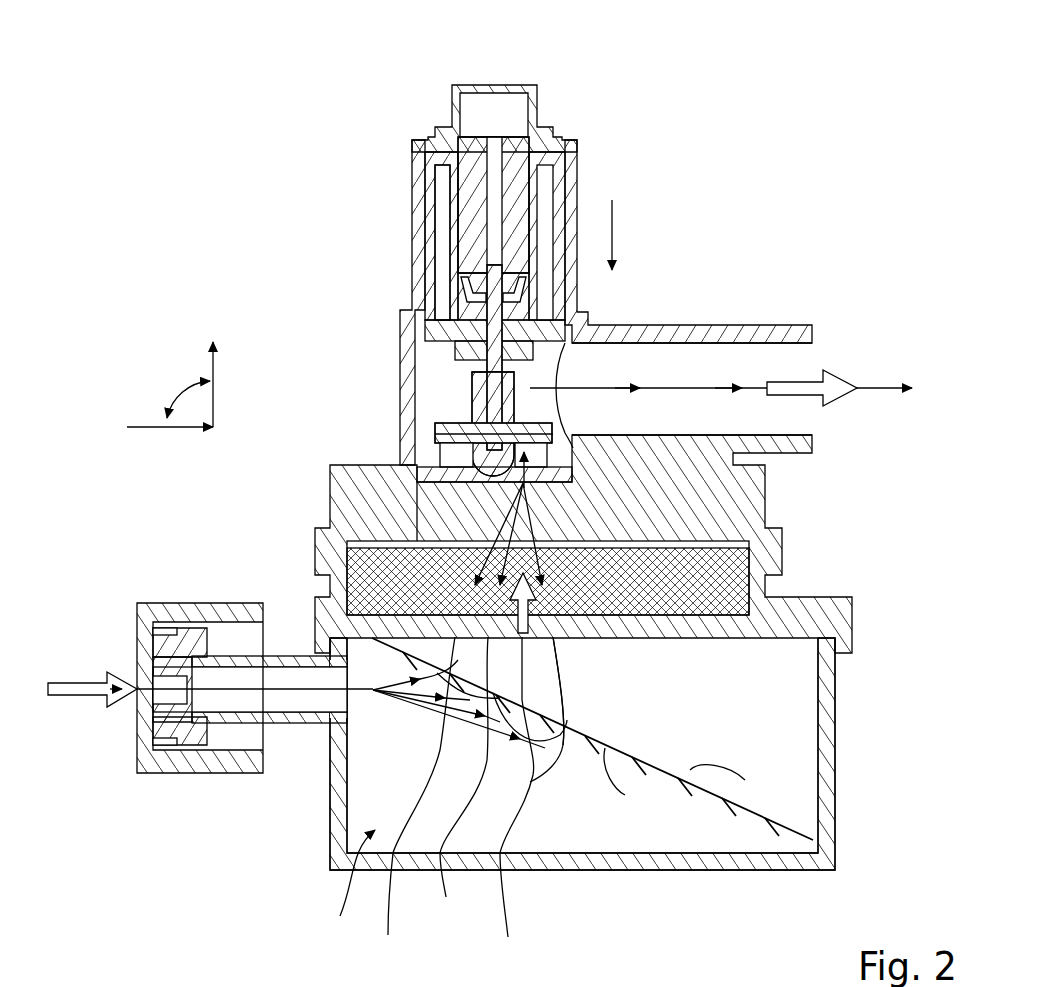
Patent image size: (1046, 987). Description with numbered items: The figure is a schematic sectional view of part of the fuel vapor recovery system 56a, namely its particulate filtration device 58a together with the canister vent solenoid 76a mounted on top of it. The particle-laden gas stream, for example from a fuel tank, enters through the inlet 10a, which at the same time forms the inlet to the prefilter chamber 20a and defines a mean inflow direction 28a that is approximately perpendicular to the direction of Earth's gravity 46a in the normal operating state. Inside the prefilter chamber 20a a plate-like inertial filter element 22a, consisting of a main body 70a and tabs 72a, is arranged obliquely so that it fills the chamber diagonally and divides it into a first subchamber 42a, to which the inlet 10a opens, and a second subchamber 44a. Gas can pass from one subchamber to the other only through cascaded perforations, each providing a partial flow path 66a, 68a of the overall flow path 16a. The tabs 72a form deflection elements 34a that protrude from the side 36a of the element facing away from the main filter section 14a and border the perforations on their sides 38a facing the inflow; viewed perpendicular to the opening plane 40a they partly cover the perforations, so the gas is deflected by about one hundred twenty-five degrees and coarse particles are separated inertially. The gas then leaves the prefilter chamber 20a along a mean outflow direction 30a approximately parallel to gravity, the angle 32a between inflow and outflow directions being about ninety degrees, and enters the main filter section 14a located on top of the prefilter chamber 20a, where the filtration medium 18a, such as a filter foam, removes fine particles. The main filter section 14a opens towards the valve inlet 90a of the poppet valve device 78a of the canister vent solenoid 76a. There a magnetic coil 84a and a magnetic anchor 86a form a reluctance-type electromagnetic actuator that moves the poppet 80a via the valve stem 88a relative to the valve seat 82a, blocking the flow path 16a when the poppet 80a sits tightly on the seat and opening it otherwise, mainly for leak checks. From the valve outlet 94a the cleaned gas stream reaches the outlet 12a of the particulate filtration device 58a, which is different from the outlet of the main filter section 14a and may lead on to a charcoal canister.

The inlet 10a is at (228, 704).
The outlet 12a is at (745, 370).
The main filter section 14a is at (725, 572).
The flow path 16a is at (75, 692).
The filtration medium 18a is at (725, 592).
The prefilter chamber 20a is at (772, 745).
The inertial filter element 22a is at (663, 772).
The mean inflow direction 28a is at (150, 428).
The mean outflow direction 30a is at (213, 362).
The angle 32a is at (170, 396).
The deflection elements 34a is at (457, 784).
The side of the inertial filter element 36a is at (583, 750).
The sides of the perforations 38a is at (558, 691).
The opening plane 40a is at (722, 805).
The first subchamber 42a is at (336, 889).
The second subchamber 44a is at (770, 718).
The direction of Earth's gravity 46a is at (612, 228).
The fuel vapor recovery system 56a is at (715, 140).
The particulate filtration device 58a is at (318, 833).
The partial flow path 66a is at (412, 802).
The partial flow path 68a is at (510, 802).
The main body 70a is at (747, 810).
The tabs 72a is at (707, 802).
The canister vent solenoid 76a is at (377, 197).
The poppet valve device 78a is at (325, 252).
The poppet 80a is at (452, 428).
The valve seat 82a is at (436, 446).
The magnetic coil 84a is at (555, 187).
The magnetic anchor 86a is at (512, 150).
The valve stem 88a is at (495, 370).
The valve inlet 90a is at (417, 466).
The valve outlet 94a is at (575, 370).